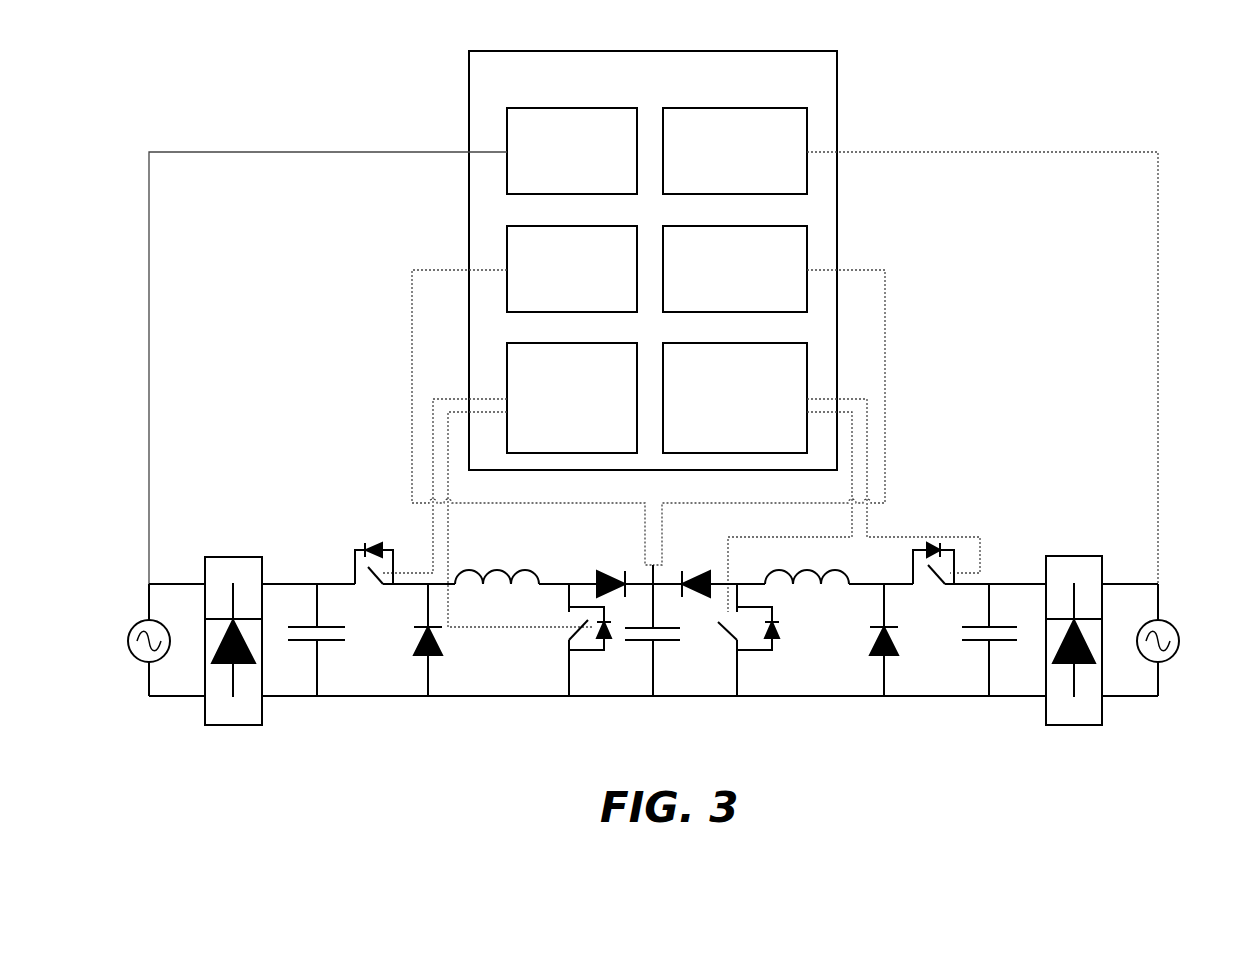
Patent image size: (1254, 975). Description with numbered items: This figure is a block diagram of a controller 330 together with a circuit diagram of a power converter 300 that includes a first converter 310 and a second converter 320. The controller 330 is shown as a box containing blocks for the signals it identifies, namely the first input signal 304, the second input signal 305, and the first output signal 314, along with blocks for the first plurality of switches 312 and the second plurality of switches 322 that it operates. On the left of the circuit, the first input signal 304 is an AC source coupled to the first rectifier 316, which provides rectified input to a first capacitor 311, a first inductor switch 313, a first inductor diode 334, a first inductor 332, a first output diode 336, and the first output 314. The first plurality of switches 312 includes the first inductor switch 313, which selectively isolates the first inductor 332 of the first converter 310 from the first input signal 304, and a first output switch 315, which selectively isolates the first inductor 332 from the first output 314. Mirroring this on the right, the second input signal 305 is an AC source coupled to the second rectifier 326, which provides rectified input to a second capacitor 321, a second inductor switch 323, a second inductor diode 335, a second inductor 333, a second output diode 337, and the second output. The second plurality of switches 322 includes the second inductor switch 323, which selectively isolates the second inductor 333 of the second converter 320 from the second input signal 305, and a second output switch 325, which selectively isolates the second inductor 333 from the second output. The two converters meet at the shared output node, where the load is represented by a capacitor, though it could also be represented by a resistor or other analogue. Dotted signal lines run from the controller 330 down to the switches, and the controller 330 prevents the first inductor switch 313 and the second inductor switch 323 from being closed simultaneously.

The power converter 300 is at (288, 308).
The first input signal 304 is at (148, 616).
The second input signal 305 is at (1158, 612).
The first converter 310 is at (520, 728).
The first capacitor 311 is at (318, 665).
The first plurality of switches 312 is at (572, 398).
The first inductor switch 313 is at (385, 588).
The first output signal 314 is at (652, 582).
The first output switch 315 is at (570, 638).
The first rectifier 316 is at (233, 725).
The second converter 320 is at (786, 728).
The second capacitor 321 is at (988, 673).
The second plurality of switches 322 is at (735, 398).
The second inductor switch 323 is at (942, 595).
The second output switch 325 is at (735, 647).
The second rectifier 326 is at (1074, 725).
The controller 330 is at (505, 51).
The first inductor 332 is at (537, 585).
The second inductor 333 is at (773, 580).
The first inductor diode 334 is at (430, 657).
The second inductor diode 335 is at (880, 657).
The first output diode 336 is at (604, 576).
The second output diode 337 is at (704, 579).